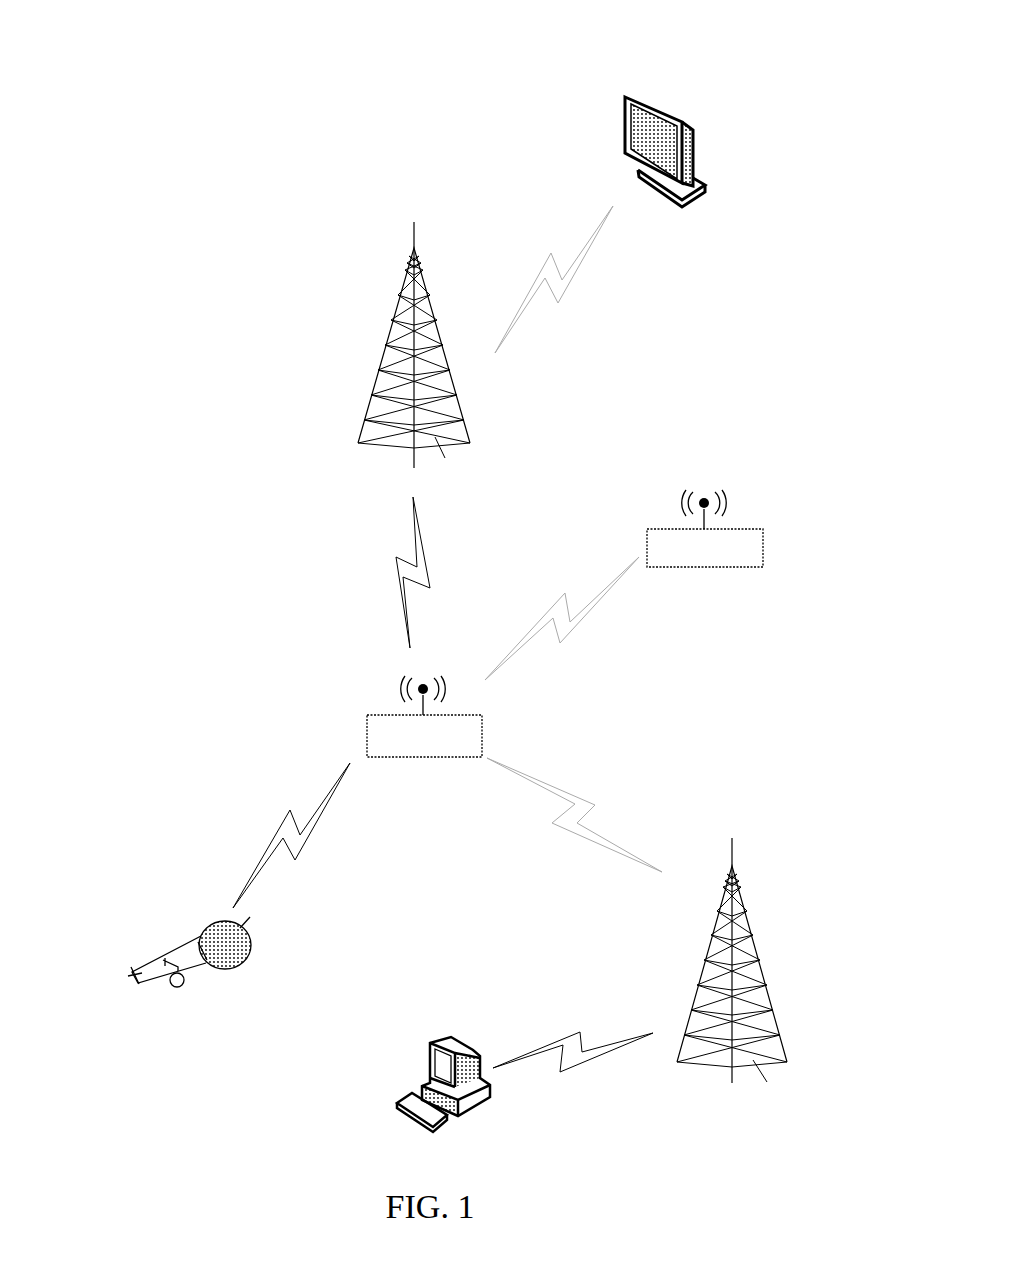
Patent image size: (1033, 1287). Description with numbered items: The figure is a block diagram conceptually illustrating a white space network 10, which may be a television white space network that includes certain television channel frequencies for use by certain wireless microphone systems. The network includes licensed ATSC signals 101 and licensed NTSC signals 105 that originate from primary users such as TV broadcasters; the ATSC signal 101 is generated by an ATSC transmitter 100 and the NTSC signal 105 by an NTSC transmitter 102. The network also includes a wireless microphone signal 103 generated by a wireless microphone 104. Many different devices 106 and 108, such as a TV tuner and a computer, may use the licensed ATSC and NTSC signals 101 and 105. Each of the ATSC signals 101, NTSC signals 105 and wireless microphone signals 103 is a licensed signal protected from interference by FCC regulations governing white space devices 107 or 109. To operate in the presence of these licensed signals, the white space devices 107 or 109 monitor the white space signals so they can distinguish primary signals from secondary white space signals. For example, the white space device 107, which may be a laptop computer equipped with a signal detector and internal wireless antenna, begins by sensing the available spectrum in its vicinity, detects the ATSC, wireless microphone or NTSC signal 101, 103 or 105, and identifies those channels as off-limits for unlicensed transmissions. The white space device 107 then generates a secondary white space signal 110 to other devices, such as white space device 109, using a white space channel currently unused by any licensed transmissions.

The white space network 10 is at (295, 55).
The ATSC transmitter 100 is at (424, 360).
The ATSC signal 101 is at (568, 292).
The NTSC transmitter 102 is at (732, 981).
The wireless microphone signal 103 is at (328, 800).
The wireless microphone 104 is at (163, 952).
The NTSC signal 105 is at (589, 802).
The device 106 is at (699, 151).
The white space device 107 is at (367, 738).
The device 108 is at (469, 1090).
The white space device 109 is at (765, 540).
The secondary white space signal 110 is at (573, 632).